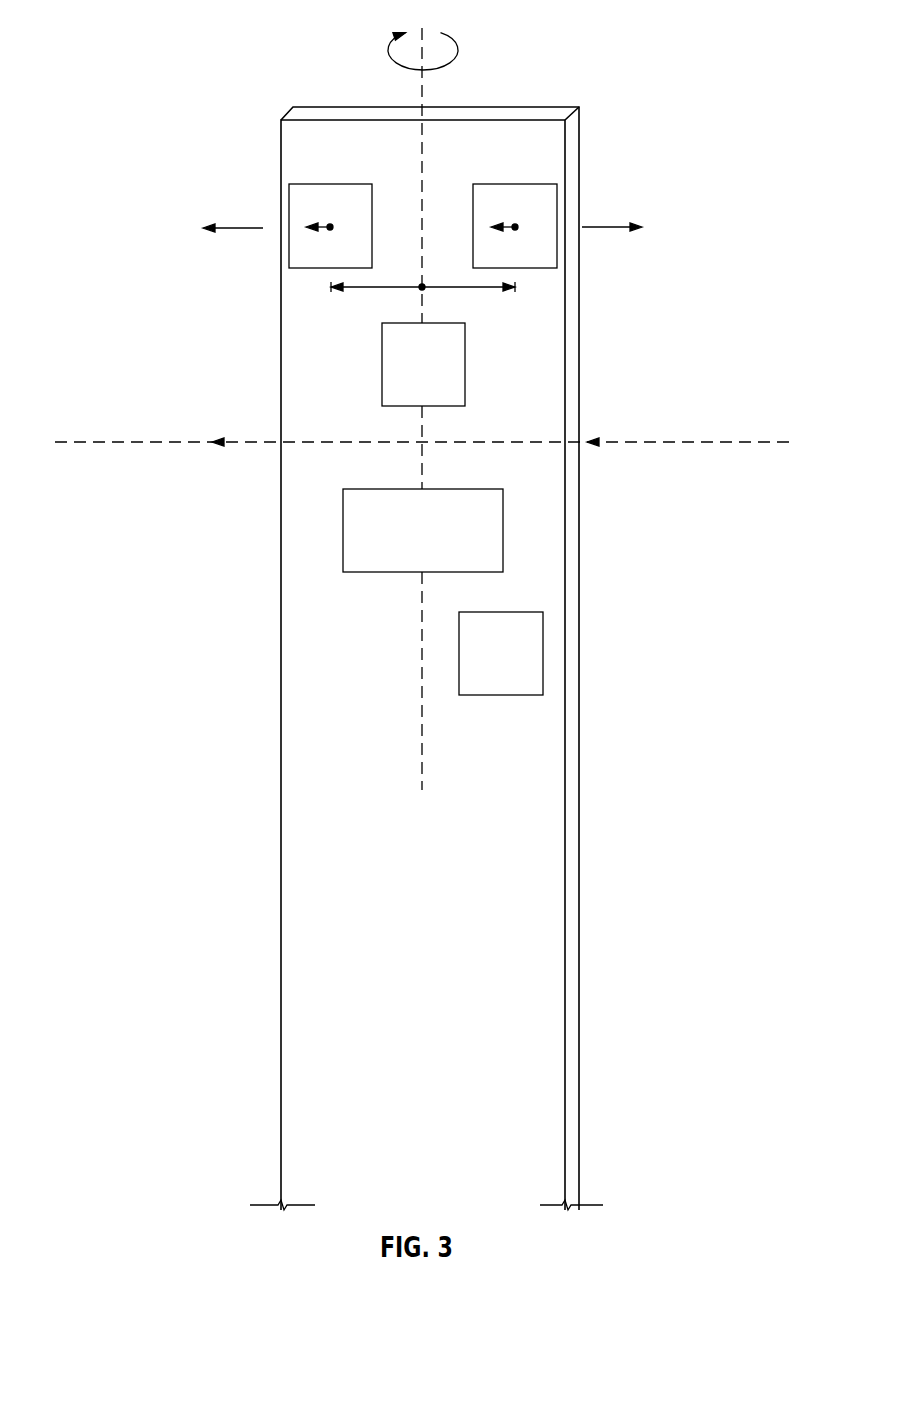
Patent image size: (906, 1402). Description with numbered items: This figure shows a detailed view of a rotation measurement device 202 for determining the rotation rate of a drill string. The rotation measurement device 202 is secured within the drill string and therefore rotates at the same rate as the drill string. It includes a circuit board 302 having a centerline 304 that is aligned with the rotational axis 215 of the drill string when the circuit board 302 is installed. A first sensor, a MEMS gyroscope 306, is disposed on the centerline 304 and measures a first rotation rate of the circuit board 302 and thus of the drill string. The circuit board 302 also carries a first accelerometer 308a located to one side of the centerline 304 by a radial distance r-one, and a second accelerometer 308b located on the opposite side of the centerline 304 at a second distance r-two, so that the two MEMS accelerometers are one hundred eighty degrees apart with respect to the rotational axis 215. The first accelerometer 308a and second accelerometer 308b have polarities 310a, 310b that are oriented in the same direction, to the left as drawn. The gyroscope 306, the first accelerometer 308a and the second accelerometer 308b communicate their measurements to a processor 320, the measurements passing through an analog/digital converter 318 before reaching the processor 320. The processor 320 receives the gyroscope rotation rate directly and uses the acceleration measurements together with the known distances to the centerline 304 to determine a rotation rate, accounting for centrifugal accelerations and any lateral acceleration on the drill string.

The rotation measurement device 202 is at (134, 95).
The circuit board 302 is at (538, 1060).
The centerline 304 is at (362, 409).
The rotational axis 215 is at (424, 736).
The gyroscope 306 is at (382, 367).
The first accelerometer 308a is at (307, 184).
The second accelerometer 308b is at (553, 184).
The polarity 310a is at (303, 231).
The polarity 310b is at (505, 231).
The analog/digital converter 318 is at (343, 530).
The processor 320 is at (543, 652).